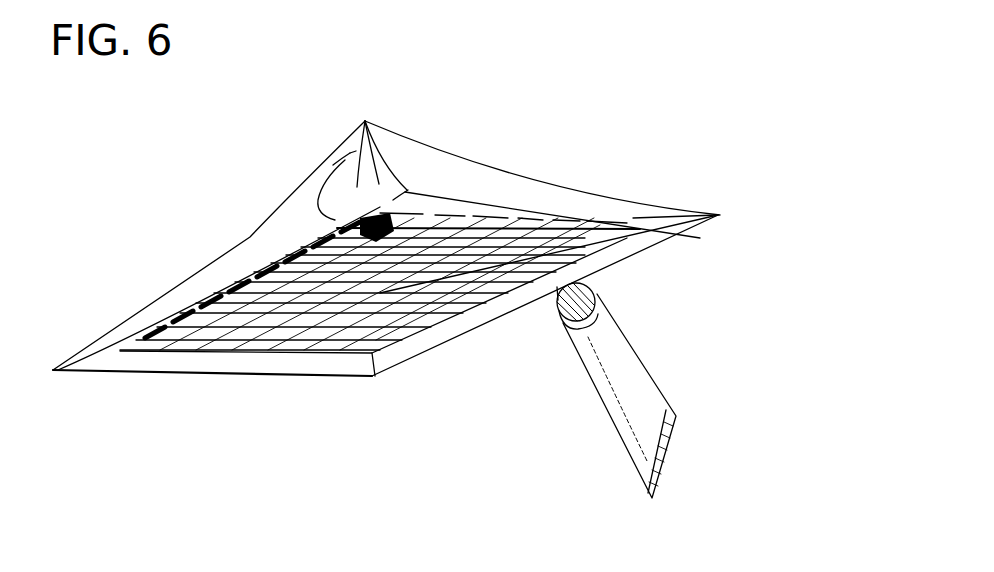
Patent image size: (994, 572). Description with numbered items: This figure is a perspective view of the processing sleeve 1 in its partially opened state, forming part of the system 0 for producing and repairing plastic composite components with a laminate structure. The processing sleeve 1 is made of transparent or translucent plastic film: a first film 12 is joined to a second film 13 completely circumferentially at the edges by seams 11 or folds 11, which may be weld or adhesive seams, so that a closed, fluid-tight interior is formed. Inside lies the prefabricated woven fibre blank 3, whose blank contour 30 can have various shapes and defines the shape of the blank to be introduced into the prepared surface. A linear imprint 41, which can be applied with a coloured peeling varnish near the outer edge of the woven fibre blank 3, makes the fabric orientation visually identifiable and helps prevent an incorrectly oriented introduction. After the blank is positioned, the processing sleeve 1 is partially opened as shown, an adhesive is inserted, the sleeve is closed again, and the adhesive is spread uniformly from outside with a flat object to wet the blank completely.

The system 0 is at (706, 115).
The processing sleeve 1 is at (580, 185).
The seam 11 is at (300, 252).
The first film 12 is at (590, 207).
The second film 13 is at (217, 372).
The woven fibre blank 3 is at (580, 286).
The blank contour 30 is at (700, 238).
The linear imprint 41 is at (238, 280).